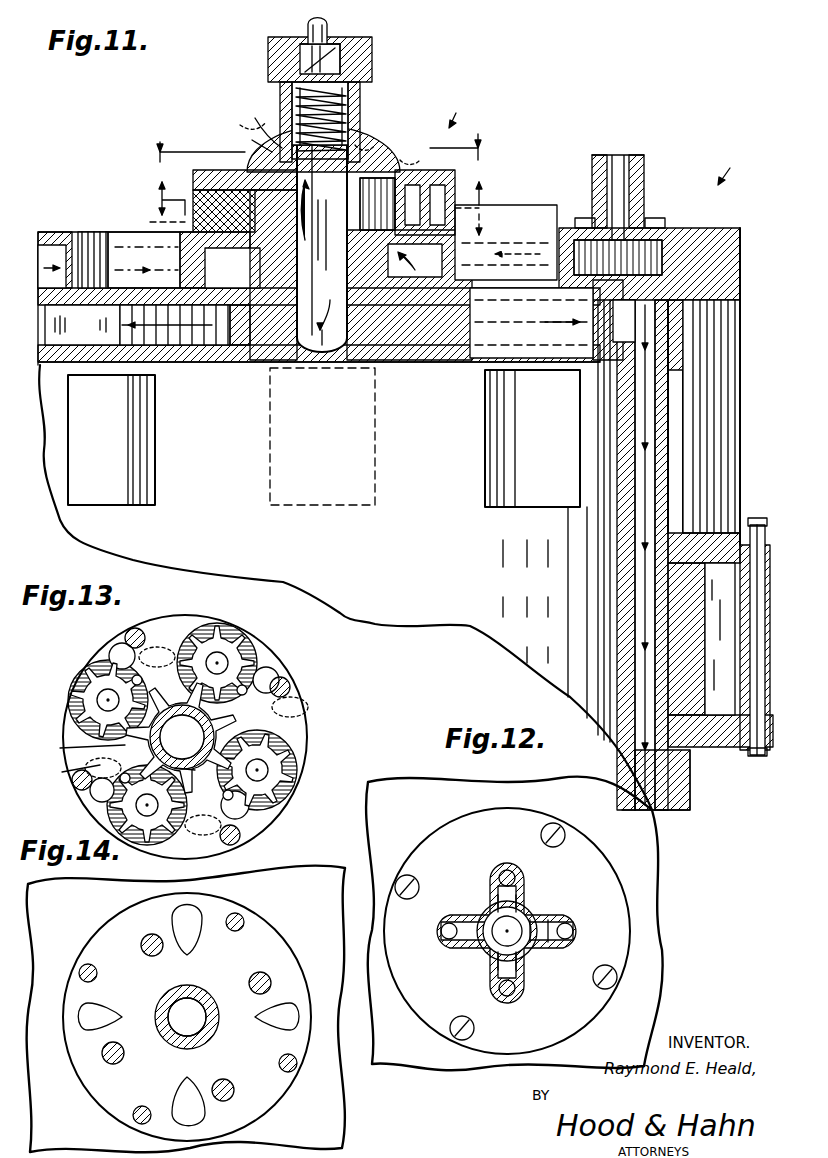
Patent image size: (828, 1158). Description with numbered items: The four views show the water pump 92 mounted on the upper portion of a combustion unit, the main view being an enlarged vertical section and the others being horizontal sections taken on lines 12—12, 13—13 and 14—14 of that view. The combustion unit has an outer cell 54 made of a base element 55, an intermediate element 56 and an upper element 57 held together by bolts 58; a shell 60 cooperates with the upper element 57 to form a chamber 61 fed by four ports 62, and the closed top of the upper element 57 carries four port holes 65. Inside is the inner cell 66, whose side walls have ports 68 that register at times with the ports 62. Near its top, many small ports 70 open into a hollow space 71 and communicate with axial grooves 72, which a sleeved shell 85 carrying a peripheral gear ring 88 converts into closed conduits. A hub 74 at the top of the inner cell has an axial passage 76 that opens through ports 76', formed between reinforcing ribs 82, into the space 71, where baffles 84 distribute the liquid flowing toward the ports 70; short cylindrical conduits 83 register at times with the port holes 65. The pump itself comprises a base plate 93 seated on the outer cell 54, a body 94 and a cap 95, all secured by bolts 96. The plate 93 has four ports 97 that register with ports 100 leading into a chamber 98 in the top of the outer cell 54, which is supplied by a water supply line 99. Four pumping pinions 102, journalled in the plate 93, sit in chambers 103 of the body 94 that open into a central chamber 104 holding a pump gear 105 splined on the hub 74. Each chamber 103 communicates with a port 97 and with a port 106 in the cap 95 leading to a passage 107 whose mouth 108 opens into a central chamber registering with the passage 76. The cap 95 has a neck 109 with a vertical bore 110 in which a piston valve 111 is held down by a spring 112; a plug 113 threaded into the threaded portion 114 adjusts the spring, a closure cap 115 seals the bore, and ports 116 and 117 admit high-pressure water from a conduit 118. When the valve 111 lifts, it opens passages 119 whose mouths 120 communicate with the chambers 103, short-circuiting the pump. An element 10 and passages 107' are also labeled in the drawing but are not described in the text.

In FIG. 11, the passage 10 is at (415, 260).
In FIG. 11, the section line 12— 12 is at (320, 148).
In FIG. 11, the section line 13— 13 is at (320, 198).
In FIG. 11, the section line 14— 14 is at (320, 221).
In FIG. 11, the outer cell 54 is at (731, 167).
In FIG. 14, the outer cell 54 is at (316, 898).
In FIG. 12, the outer cell 54 is at (412, 778).
In FIG. 11, the base element 55 is at (690, 798).
In FIG. 11, the intermediate element 56 is at (770, 672).
In FIG. 11, the upper element 57 is at (680, 286).
In FIG. 11, the bolts 58 is at (762, 520).
In FIG. 11, the shell 60 is at (738, 368).
In FIG. 11, the chamber 61 is at (720, 440).
In FIG. 11, the ports 62 is at (700, 478).
In FIG. 11, the port holes 65 is at (92, 236).
In FIG. 11, the inner cell 66 is at (531, 521).
In FIG. 11, the ports 68 is at (455, 492).
In FIG. 11, the small ports 70 is at (630, 310).
In FIG. 11, the hollow space 71 is at (230, 335).
In FIG. 11, the grooves 72 is at (650, 430).
In FIG. 11, the hub 74 is at (232, 267).
In FIG. 13, the hub 74 is at (215, 728).
In FIG. 14, the hub 74 is at (178, 986).
In FIG. 11, the axial passage 76 is at (322, 246).
In FIG. 13, the axial passage 76 is at (181, 738).
In FIG. 14, the axial passage 76 is at (187, 1017).
In FIG. 11, the ports 76' is at (331, 301).
In FIG. 11, the reinforcing ribs 82 is at (355, 368).
In FIG. 11, the short cylindrical conduits 83 is at (490, 360).
In FIG. 11, the baffles 84 is at (82, 325).
In FIG. 11, the shell 85 is at (672, 350).
In FIG. 11, the peripheral gear ring 88 is at (722, 632).
In FIG. 11, the water pump 92 is at (462, 113).
In FIG. 11, the base plate 93 is at (455, 232).
In FIG. 14, the base plate 93 is at (108, 925).
In FIG. 11, the body 94 is at (192, 186).
In FIG. 13, the body 94 is at (300, 715).
In FIG. 11, the cap 95 is at (365, 140).
In FIG. 12, the cap 95 is at (500, 810).
In FIG. 13, the bolts 96 is at (72, 784).
In FIG. 14, the bolts 96 is at (80, 975).
In FIG. 12, the bolts 96 is at (407, 899).
In FIG. 11, the ports 97 is at (185, 238).
In FIG. 14, the ports 97 is at (180, 1082).
In FIG. 11, the chamber 98 is at (215, 335).
In FIG. 11, the water supply line 99 is at (644, 172).
In FIG. 11, the ports 100 is at (215, 260).
In FIG. 11, the pumping pinions 102 is at (440, 168).
In FIG. 13, the pumping pinions 102 is at (142, 840).
In FIG. 11, the chamber 103 is at (452, 190).
In FIG. 13, the chamber 103 is at (190, 842).
In FIG. 13, the central chamber 104 is at (160, 682).
In FIG. 11, the pump gear 105 is at (245, 170).
In FIG. 13, the pump gear 105 is at (63, 767).
In FIG. 11, the port 106 is at (380, 145).
In FIG. 13, the port 106 is at (272, 810).
In FIG. 11, the passage 107 is at (246, 120).
In FIG. 13, the passage 107 is at (196, 741).
In FIG. 11, the passage 107' is at (416, 156).
In FIG. 11, the mouth 108 is at (321, 210).
In FIG. 11, the neck 109 is at (360, 95).
In FIG. 11, the vertical bore 110 is at (350, 120).
In FIG. 11, the piston valve 111 is at (370, 136).
In FIG. 12, the piston valve 111 is at (545, 945).
In FIG. 11, the spring 112 is at (280, 90).
In FIG. 12, the spring 112 is at (493, 920).
In FIG. 11, the plug 113 is at (345, 55).
In FIG. 11, the threaded portion 114 is at (372, 70).
In FIG. 11, the closure cap 115 is at (268, 44).
In FIG. 11, the port 116 is at (348, 44).
In FIG. 11, the port 117 is at (298, 42).
In FIG. 11, the conduit 118 is at (328, 26).
In FIG. 11, the passages 119 is at (252, 122).
In FIG. 12, the passages 119 is at (495, 962).
In FIG. 11, the mouths 120 is at (247, 141).
In FIG. 13, the mouths 120 is at (115, 758).
In FIG. 12, the mouths 120 is at (520, 995).